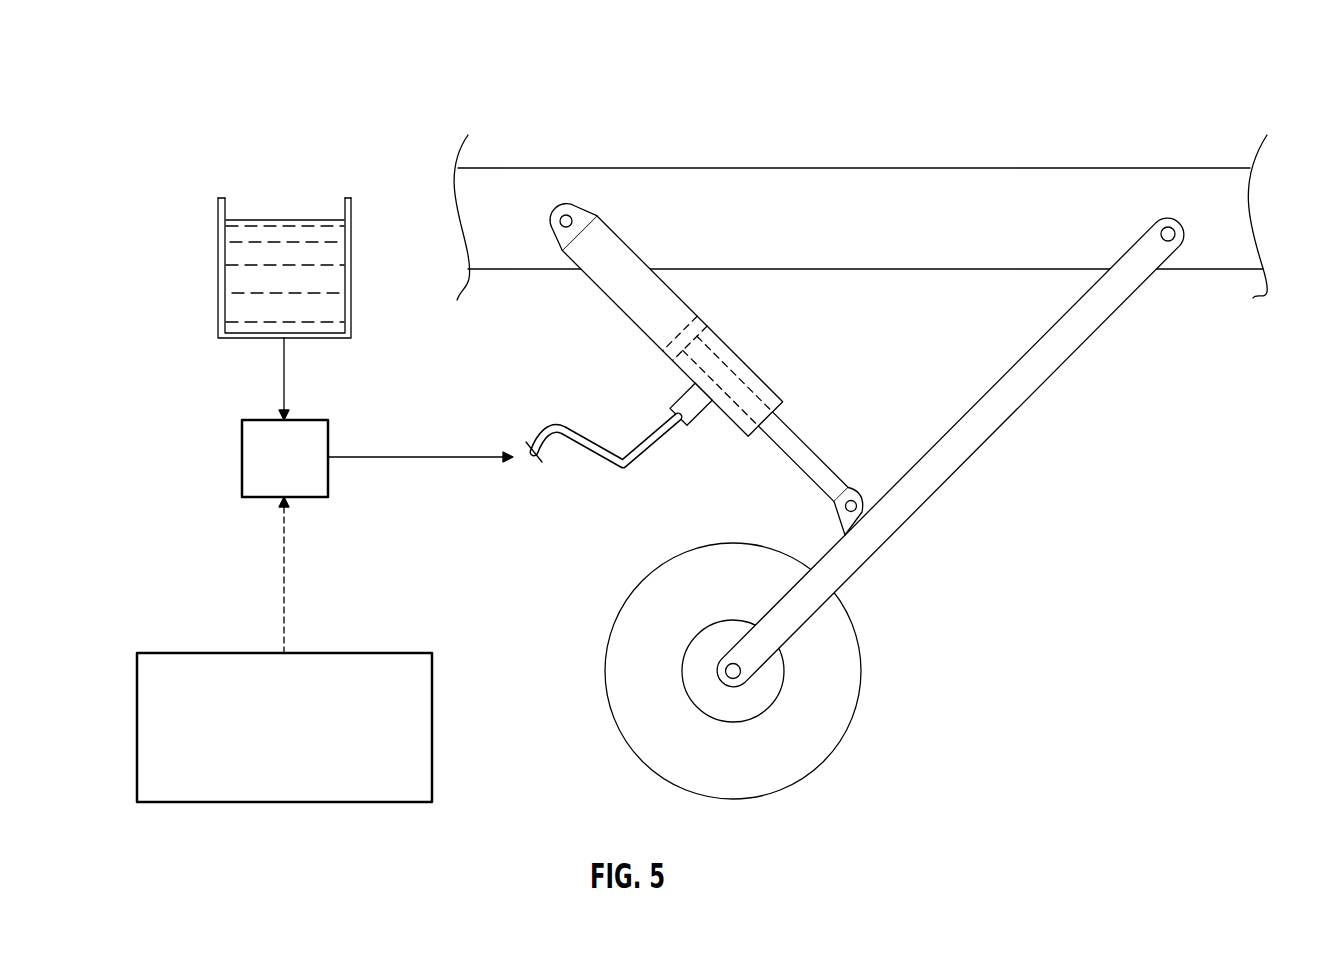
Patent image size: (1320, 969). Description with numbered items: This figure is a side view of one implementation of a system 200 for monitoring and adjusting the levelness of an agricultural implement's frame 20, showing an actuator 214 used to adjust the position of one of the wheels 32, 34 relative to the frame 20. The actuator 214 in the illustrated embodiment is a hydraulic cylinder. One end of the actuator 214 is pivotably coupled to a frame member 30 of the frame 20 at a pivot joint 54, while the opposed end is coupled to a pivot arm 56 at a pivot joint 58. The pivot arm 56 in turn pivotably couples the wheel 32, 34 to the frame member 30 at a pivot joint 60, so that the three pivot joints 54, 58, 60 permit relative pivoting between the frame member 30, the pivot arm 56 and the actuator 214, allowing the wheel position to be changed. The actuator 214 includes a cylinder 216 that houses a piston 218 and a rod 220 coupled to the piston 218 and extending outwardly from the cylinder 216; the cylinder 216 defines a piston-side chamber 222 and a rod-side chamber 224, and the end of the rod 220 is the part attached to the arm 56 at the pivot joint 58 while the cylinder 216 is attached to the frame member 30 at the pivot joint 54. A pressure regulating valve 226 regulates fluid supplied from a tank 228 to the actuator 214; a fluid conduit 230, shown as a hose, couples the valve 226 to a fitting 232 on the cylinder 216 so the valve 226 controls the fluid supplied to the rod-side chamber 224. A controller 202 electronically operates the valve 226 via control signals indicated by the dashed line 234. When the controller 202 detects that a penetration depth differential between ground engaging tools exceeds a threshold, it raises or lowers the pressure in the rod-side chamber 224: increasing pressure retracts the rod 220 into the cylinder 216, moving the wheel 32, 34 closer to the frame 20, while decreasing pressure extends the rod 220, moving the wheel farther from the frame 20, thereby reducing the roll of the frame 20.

The frame 20 is at (859, 112).
The frame member 30 is at (957, 190).
The wheel 32 is at (857, 705).
The wheel 34 is at (733, 671).
The pivot joint 54 is at (573, 213).
The pivot arm 56 is at (1017, 412).
The pivot joint 58 is at (852, 497).
The pivot joint 60 is at (1173, 216).
The system 200 is at (303, 126).
The controller 202 is at (215, 652).
The actuator 214 is at (722, 316).
The cylinder 216 is at (585, 280).
The piston 218 is at (667, 350).
The rod 220 is at (803, 442).
The piston-side chamber 222 is at (632, 305).
The rod-side chamber 224 is at (747, 377).
The pressure regulating valve 226 is at (241, 463).
The tank 228 is at (217, 280).
The fluid conduit 230 is at (613, 467).
The fitting 232 is at (700, 427).
The dashed line 234 is at (287, 605).